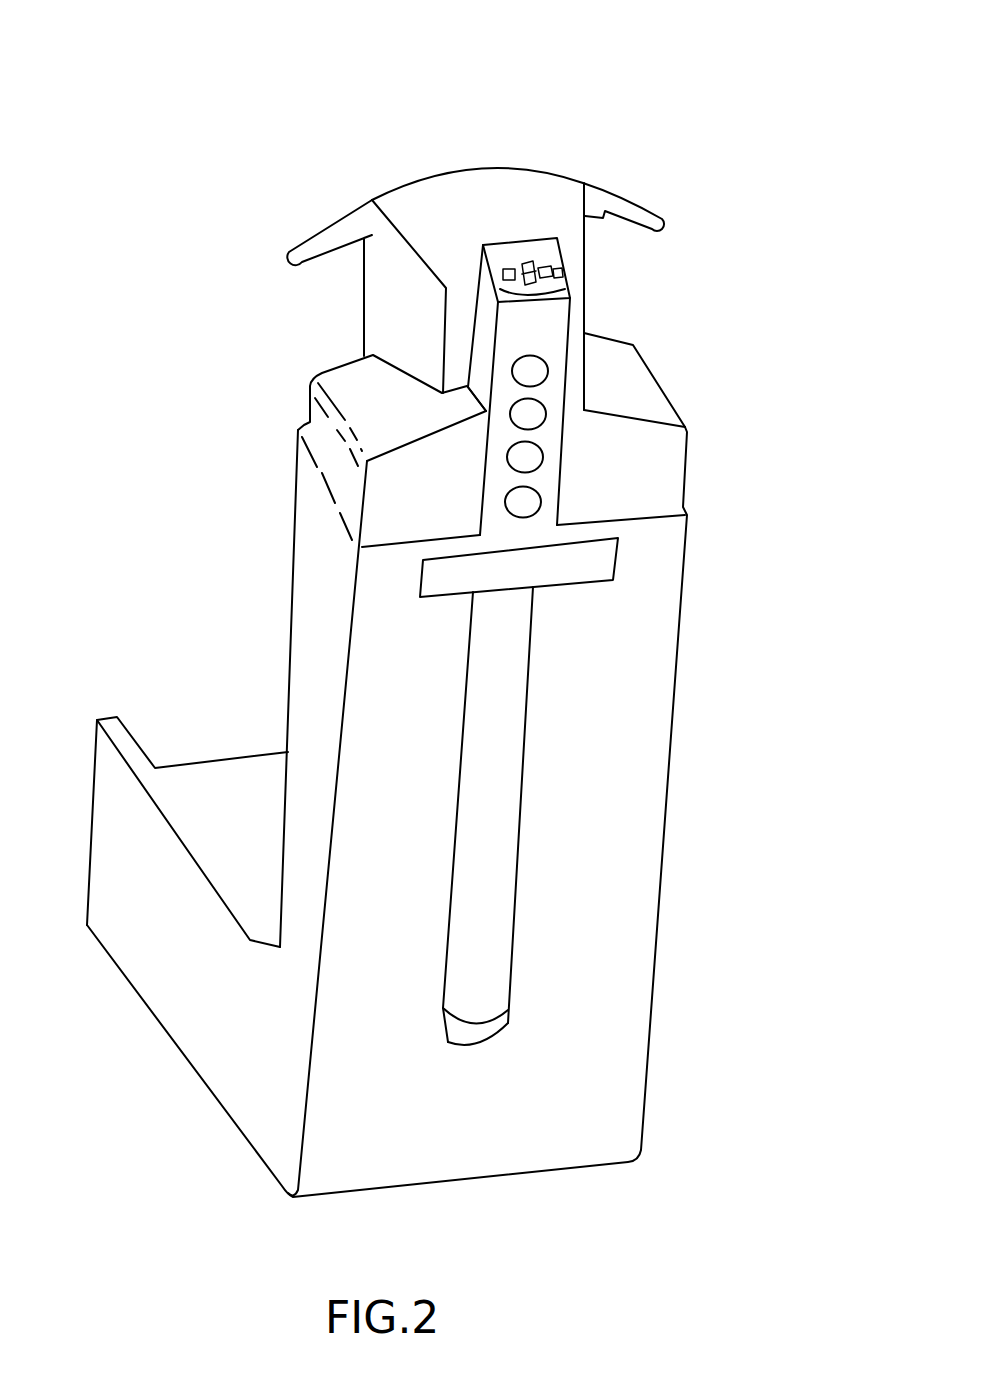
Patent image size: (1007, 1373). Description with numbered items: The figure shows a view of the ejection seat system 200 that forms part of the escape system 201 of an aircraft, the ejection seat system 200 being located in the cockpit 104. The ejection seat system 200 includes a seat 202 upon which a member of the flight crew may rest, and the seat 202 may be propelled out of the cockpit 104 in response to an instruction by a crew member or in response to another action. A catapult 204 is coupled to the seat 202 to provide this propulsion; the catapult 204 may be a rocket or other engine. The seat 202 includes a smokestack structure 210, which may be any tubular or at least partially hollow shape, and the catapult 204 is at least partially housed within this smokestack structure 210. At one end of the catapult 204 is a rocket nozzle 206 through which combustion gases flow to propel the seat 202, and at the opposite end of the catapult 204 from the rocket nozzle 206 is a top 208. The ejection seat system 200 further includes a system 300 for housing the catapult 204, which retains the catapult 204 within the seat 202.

The cockpit 104 is at (276, 55).
The escape system 201 is at (290, 155).
The ejection seat system 200 is at (265, 448).
The seat 202 is at (700, 562).
The catapult 204 is at (497, 877).
The rocket nozzle 206 is at (490, 1033).
The top 208 is at (548, 285).
The smokestack structure 210 is at (513, 397).
The system for housing the catapult 300 is at (598, 376).